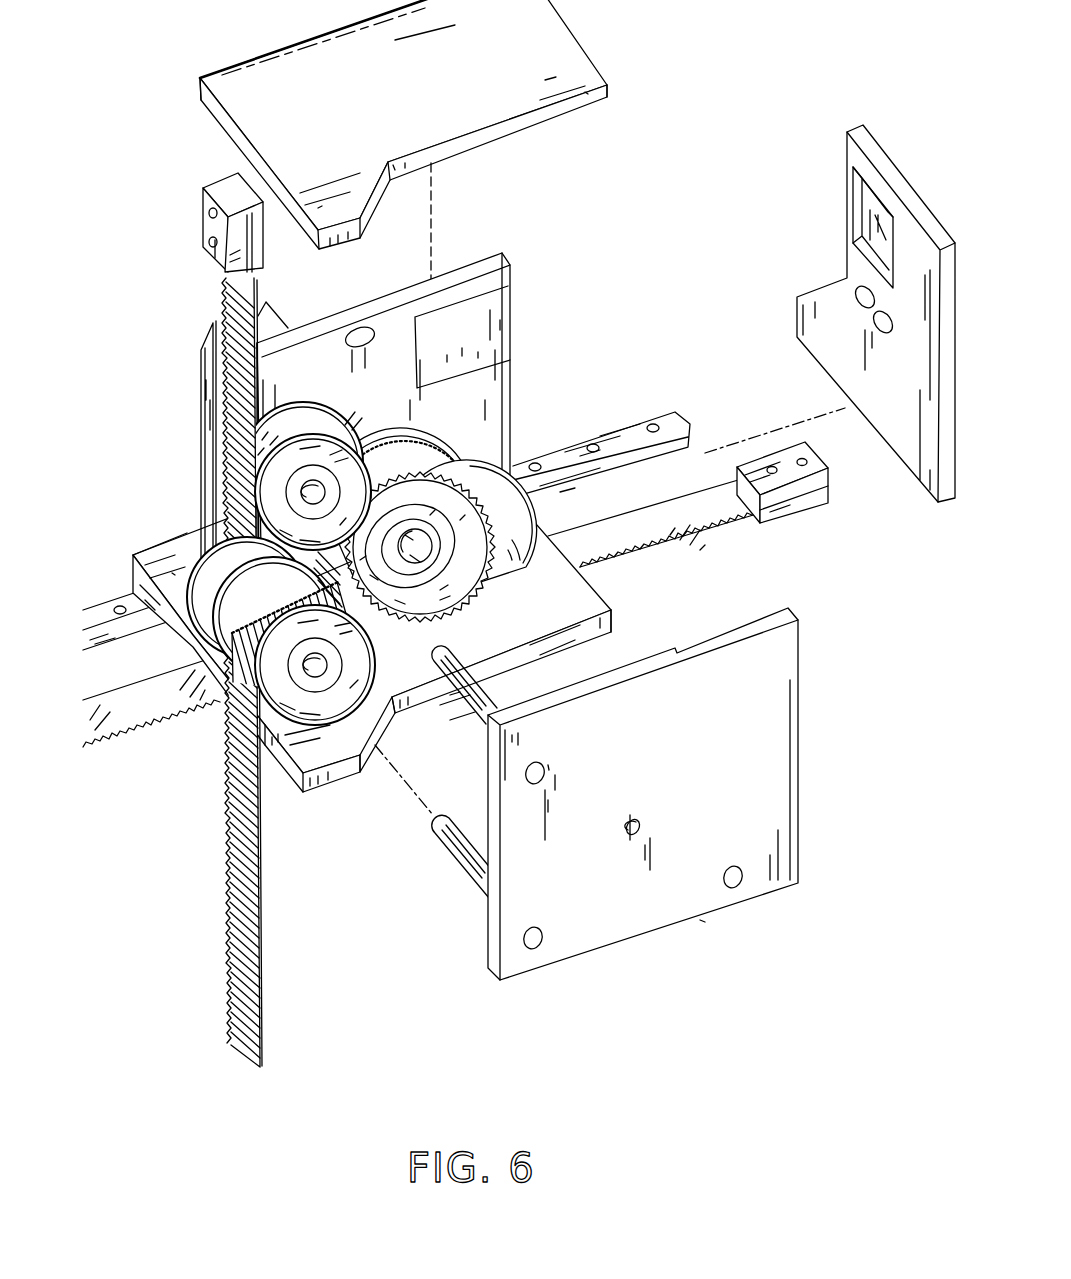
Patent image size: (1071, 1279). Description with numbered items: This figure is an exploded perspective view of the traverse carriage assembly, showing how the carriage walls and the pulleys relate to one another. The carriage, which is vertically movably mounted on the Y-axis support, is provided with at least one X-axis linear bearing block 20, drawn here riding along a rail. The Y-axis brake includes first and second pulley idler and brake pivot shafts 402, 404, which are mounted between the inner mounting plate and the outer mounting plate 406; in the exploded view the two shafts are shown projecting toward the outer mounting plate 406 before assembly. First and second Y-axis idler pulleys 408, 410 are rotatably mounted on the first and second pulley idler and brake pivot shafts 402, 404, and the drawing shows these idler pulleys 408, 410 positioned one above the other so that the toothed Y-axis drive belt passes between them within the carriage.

The X-axis linear bearing block 20 is at (132, 580).
The first pulley idler and brake pivot shaft 402 is at (468, 687).
The second pulley idler and brake pivot shaft 404 is at (460, 847).
The outer mounting plate 406 is at (767, 758).
The first Y-axis idler pulley 408 is at (273, 507).
The second Y-axis idler pulley 410 is at (267, 688).